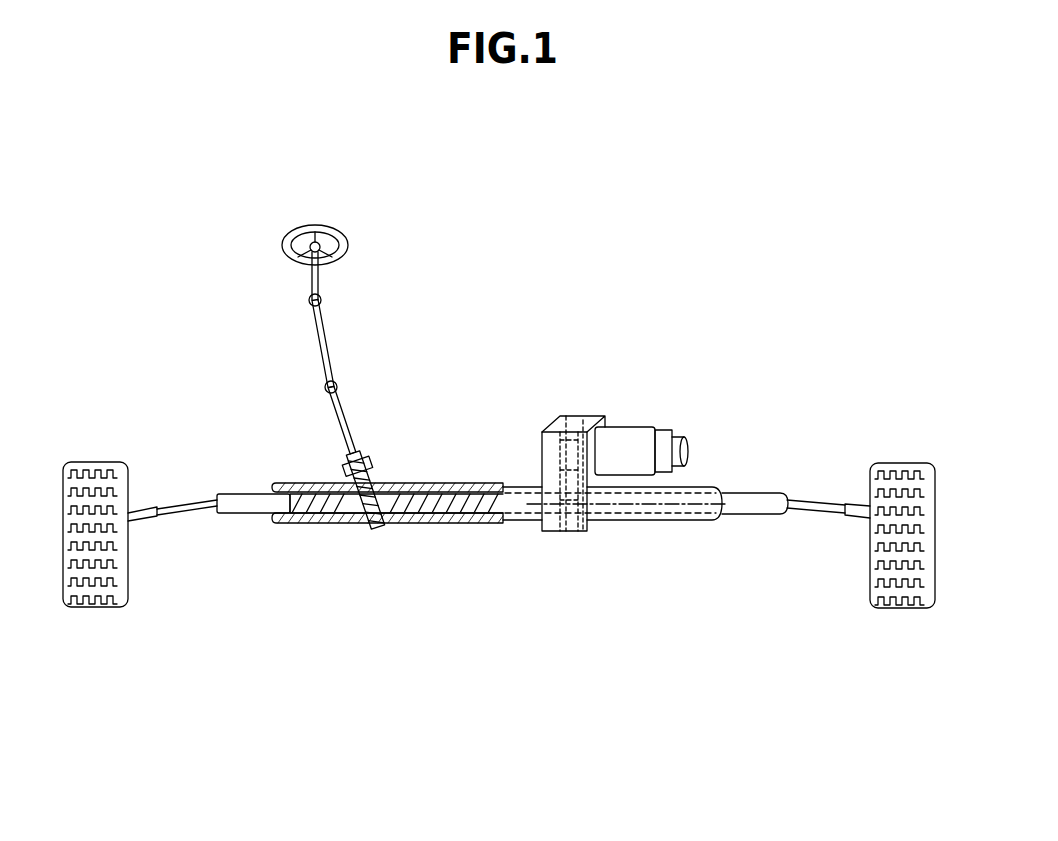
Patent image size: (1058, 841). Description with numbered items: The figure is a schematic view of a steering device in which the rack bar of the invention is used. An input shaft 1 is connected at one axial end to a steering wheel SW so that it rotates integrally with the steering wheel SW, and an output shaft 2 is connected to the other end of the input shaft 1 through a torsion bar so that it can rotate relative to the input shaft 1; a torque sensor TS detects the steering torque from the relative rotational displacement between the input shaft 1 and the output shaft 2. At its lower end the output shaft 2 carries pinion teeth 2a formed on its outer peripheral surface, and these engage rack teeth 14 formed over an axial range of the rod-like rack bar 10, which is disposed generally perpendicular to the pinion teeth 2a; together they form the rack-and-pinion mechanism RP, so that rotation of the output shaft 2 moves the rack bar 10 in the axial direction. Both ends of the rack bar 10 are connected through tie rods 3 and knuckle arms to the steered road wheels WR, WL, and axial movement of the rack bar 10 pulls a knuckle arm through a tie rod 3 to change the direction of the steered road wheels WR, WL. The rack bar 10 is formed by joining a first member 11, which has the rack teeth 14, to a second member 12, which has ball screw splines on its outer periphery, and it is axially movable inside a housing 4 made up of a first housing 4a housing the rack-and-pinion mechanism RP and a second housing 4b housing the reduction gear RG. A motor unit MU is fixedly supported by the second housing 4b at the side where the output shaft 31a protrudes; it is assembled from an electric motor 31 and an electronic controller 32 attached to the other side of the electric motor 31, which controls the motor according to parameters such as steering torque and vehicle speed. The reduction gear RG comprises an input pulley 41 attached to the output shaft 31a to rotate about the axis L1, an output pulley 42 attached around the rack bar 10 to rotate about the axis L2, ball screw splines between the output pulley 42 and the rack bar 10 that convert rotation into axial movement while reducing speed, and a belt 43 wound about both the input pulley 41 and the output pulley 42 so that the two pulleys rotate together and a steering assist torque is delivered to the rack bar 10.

The input shaft 1 is at (355, 410).
The output shaft 2 is at (381, 483).
The pinion teeth 2a is at (364, 528).
The tie rod 3 is at (186, 502).
The housing 4 is at (601, 406).
The first housing 4a is at (467, 483).
The second housing 4b is at (721, 486).
The rack bar 10 is at (675, 678).
The first member 11 is at (481, 527).
The second member 12 is at (641, 527).
The rack teeth 14 is at (396, 552).
The electric motor 31 is at (601, 403).
The output shaft 31a is at (578, 432).
The electronic controller 32 is at (664, 436).
The input pulley 41 is at (570, 428).
The output pulley 42 is at (573, 531).
The belt 43 is at (565, 472).
The steering wheel SW is at (348, 243).
The torque sensor TS is at (343, 470).
The rack-and-pinion mechanism RP is at (418, 604).
The reduction gear RG is at (601, 414).
The motor unit MU is at (622, 386).
The axis L1 is at (527, 449).
The axis L2 is at (684, 510).
The steered road wheel WR is at (97, 608).
The steered road wheel WL is at (900, 609).